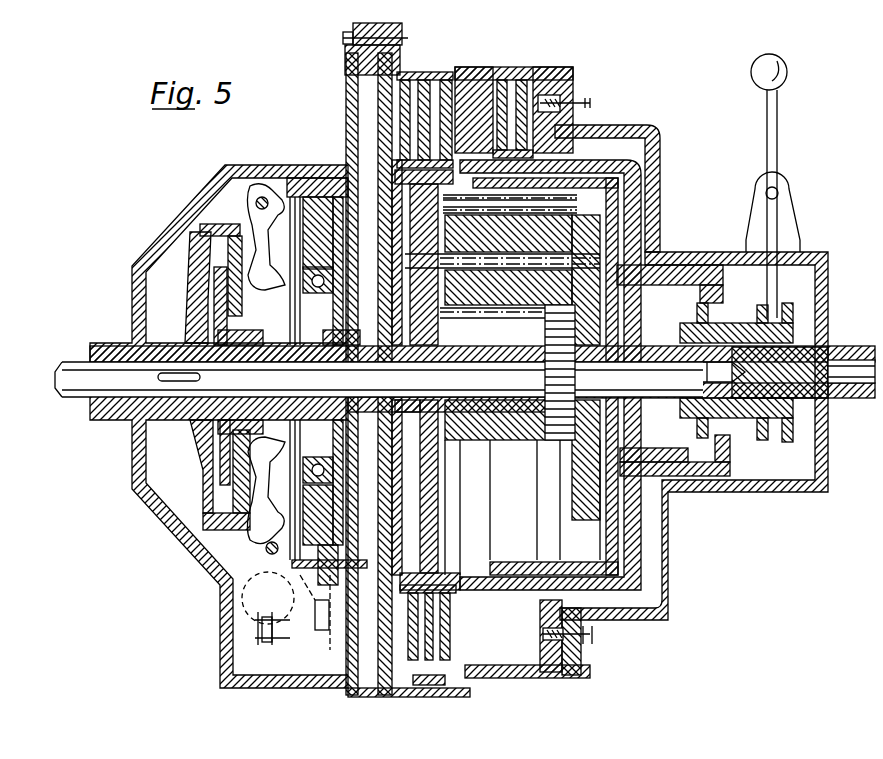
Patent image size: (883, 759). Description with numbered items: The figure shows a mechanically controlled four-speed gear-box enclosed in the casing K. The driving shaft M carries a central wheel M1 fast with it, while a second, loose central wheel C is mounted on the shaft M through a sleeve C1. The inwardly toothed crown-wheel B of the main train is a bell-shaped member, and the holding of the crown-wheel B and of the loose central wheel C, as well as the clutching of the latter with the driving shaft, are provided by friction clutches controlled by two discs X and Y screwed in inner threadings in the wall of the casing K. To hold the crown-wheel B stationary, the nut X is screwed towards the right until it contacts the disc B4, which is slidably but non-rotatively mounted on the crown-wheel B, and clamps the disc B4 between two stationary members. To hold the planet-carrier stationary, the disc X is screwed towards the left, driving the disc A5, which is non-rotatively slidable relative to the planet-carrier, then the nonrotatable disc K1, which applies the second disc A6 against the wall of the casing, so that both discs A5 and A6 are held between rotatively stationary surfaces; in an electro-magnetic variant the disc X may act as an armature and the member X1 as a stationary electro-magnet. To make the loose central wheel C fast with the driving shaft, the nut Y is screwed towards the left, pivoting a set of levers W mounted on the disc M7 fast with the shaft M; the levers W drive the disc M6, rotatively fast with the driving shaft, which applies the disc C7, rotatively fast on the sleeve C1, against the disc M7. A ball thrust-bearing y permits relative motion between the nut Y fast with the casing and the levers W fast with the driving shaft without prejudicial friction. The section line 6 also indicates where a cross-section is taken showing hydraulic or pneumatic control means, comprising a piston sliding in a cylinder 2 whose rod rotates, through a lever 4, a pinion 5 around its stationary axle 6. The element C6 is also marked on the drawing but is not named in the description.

The casing K is at (238, 172).
The disc (nut) Y is at (327, 190).
The ball thrust-bearing y is at (312, 292).
The disc M6 is at (200, 228).
The disc M7 is at (198, 288).
The levers W is at (266, 369).
The disc C7 is at (262, 340).
The cylinder 2 is at (265, 608).
The lever 4 is at (310, 580).
The pinion 5 is at (326, 587).
The stationary axle 6 is at (298, 140).
The disc A6 is at (412, 80).
The nonrotatable disc K1 is at (445, 95).
The disc (nut) X is at (505, 80).
The disc A5 is at (470, 100).
The stationary electro-magnet X1 is at (568, 108).
The disc B4 is at (548, 80).
The crown-wheel B is at (590, 170).
The loose central wheel C is at (515, 430).
The driving shaft M is at (64, 398).
The central wheel M1 is at (560, 440).
The sleeve C1 is at (408, 405).
The ring C6 is at (376, 300).